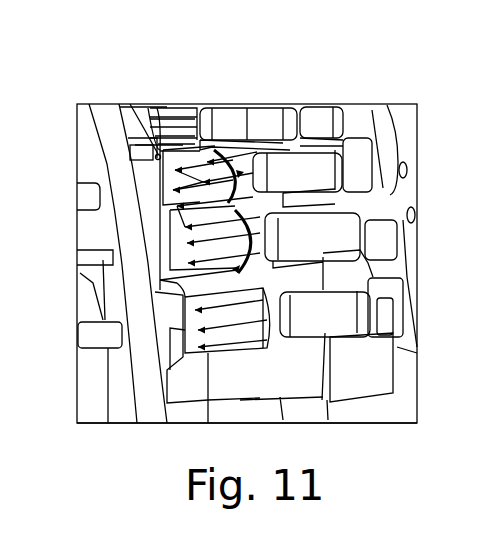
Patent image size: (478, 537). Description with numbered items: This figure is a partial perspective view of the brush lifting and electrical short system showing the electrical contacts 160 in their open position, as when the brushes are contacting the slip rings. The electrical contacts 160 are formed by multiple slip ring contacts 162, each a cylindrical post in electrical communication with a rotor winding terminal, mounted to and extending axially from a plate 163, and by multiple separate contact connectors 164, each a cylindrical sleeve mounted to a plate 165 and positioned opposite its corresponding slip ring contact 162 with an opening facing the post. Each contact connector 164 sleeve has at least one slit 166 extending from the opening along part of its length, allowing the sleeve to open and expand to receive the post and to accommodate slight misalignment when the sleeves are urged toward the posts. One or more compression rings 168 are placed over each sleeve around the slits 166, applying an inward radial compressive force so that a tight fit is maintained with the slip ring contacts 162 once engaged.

The electrical contacts 160 is at (253, 100).
The slip ring contact 162 is at (298, 177).
The plate 163 is at (401, 196).
The contact connector 164 is at (157, 155).
The plate 165 is at (157, 423).
The slit 166 is at (207, 162).
The compression ring 168 is at (243, 140).